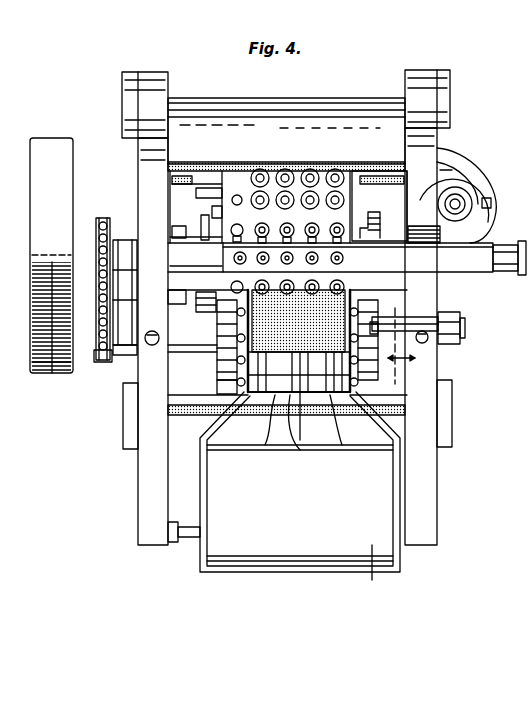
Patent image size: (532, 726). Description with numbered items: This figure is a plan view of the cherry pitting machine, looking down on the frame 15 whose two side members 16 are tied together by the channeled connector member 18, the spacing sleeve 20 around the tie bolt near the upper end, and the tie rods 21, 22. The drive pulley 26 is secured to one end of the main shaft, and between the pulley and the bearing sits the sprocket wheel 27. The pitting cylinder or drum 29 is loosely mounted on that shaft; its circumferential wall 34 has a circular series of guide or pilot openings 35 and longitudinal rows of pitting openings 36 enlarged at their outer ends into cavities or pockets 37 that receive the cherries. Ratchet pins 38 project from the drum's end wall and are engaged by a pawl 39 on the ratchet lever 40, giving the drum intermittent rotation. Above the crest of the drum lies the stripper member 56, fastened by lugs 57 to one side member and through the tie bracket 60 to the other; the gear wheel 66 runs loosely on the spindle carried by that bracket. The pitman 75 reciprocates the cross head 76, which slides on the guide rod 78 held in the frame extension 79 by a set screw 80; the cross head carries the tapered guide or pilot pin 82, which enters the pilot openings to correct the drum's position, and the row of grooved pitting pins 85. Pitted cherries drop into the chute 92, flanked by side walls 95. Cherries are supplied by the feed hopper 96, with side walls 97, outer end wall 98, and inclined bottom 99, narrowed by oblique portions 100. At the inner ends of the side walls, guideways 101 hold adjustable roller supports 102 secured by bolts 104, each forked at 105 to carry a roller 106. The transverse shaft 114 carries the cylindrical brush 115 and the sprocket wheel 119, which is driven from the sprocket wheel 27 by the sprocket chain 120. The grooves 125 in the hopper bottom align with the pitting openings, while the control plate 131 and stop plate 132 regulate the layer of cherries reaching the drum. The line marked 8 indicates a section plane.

The section line 8- 8 is at (395, 345).
The frame 15 is at (440, 165).
The side members 16 is at (142, 468).
The channeled connector member 18 is at (168, 366).
The spacing sleeve 20 is at (213, 163).
The tie rod 21 is at (188, 540).
The tie rod 22 is at (187, 415).
The drive pulley 26 is at (46, 374).
The sprocket wheel 27 is at (104, 220).
The pitting cylinder or drum 29 is at (352, 218).
The circumferential wall 34 is at (253, 170).
The guide or pilot openings 35 is at (212, 193).
The pitting openings 36 is at (300, 166).
The cavities or pockets 37 is at (330, 166).
The ratchet pins 38 is at (213, 210).
The pawl 39 is at (206, 307).
The ratchet lever 40 is at (203, 238).
The stripper member 56 is at (200, 267).
The fastening lugs 57 is at (173, 228).
The tie bracket 60 is at (424, 233).
The gear wheel 66 is at (381, 216).
The pitman 75 is at (507, 272).
The cross head 76 is at (358, 257).
The guide rod 78 is at (448, 201).
The extension of the frame 79 is at (476, 195).
The set screw 80 is at (491, 203).
The guide or pilot pin 82 is at (234, 256).
The pitting pins 85 is at (343, 256).
The chute 92 is at (278, 100).
The side walls 95 is at (175, 184).
The feed hopper 96 is at (203, 573).
The side walls 97 is at (208, 505).
The outer end wall 98 is at (310, 572).
The inclined bottom 99 is at (372, 572).
The oblique portions 100 is at (233, 418).
The guideway 101 is at (217, 362).
The roller support 102 is at (240, 338).
The securing bolt 104 is at (400, 318).
The forked portion 105 is at (463, 326).
The roller 106 is at (428, 340).
The transverse shaft 114 is at (462, 331).
The cylindrical brush 115 is at (304, 396).
The sprocket wheel 119 is at (100, 360).
The sprocket chain 120 is at (95, 248).
The flutes or grooves 125 is at (270, 420).
The control plate 131 is at (302, 452).
The stop plate 132 is at (299, 341).